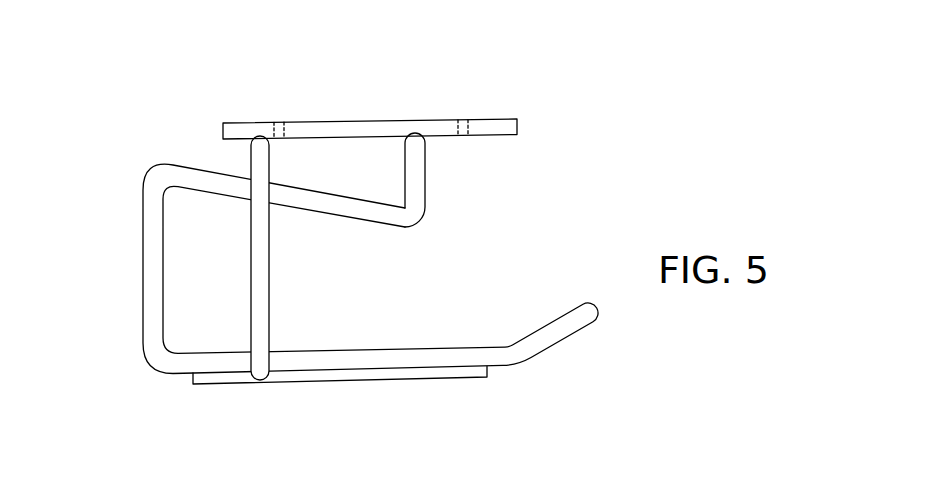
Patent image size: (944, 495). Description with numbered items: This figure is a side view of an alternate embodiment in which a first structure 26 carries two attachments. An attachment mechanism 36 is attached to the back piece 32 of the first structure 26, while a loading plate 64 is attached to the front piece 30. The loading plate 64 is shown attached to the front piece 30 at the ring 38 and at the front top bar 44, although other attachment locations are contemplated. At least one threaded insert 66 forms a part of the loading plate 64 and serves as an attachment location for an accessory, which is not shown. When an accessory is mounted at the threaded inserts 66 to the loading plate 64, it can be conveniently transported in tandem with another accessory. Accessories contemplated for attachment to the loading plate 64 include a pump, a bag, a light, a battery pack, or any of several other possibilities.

The first structure 26 is at (376, 249).
The front piece 30 is at (203, 183).
The back piece 32 is at (485, 358).
The attachment mechanism 36 is at (396, 376).
The ring 38 is at (258, 325).
The front top bar 44 is at (429, 196).
The loading plate 64 is at (385, 128).
The threaded insert 66 is at (279, 112).